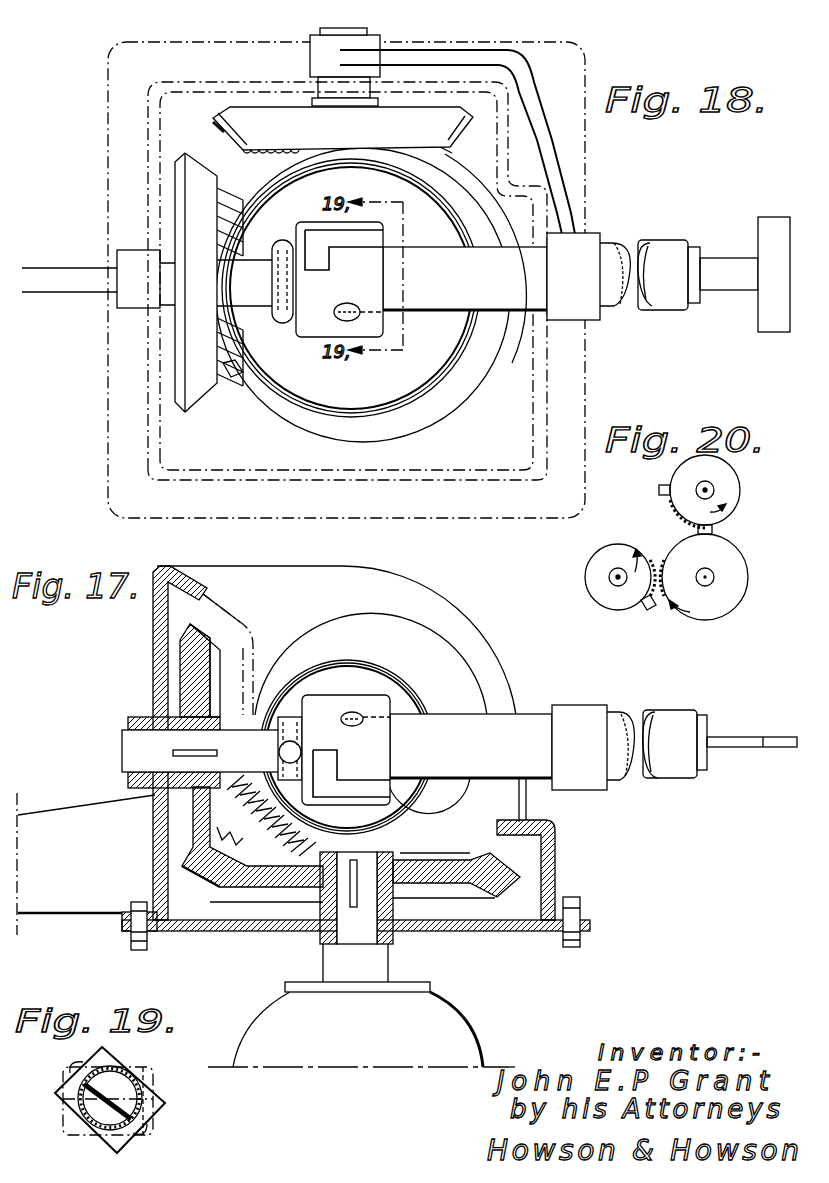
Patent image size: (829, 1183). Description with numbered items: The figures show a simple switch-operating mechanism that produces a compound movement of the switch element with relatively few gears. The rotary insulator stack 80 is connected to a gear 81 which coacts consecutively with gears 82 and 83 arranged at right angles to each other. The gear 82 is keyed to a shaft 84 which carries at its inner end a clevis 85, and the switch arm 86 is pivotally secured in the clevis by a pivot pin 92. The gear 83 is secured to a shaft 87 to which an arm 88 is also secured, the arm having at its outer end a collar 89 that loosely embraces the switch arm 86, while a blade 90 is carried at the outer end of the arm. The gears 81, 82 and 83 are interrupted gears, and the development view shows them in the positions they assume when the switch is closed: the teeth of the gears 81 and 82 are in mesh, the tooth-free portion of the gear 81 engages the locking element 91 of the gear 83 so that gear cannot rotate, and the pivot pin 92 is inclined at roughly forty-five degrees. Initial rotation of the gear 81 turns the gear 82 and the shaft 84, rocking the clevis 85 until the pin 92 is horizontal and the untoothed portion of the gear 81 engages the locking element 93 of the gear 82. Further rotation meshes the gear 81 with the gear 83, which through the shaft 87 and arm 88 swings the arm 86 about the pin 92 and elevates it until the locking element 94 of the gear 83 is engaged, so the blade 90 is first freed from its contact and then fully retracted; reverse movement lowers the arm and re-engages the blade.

In FIG. 17, the rotary insulator stack 80 is at (448, 1016).
In FIG. 18, the gear 81 is at (405, 433).
In FIG. 17, the gear 81 is at (201, 897).
In FIG. 20, the gear 81 is at (748, 591).
In FIG. 18, the gear 82 is at (205, 405).
In FIG. 17, the gear 82 is at (212, 647).
In FIG. 20, the gear 82 is at (613, 548).
In FIG. 18, the gear 83 is at (273, 130).
In FIG. 17, the gear 83 is at (420, 652).
In FIG. 20, the gear 83 is at (740, 493).
In FIG. 18, the shaft 84 is at (115, 266).
In FIG. 17, the shaft 84 is at (126, 745).
In FIG. 20, the shaft 84 is at (615, 578).
In FIG. 18, the clevis 85 is at (383, 275).
In FIG. 17, the clevis 85 is at (330, 703).
In FIG. 19, the clevis 85 is at (147, 1132).
In FIG. 18, the switch arm 86 is at (523, 300).
In FIG. 17, the switch arm 86 is at (522, 722).
In FIG. 19, the switch arm 86 is at (97, 1128).
In FIG. 18, the shaft 87 is at (367, 33).
In FIG. 20, the shaft 87 is at (708, 488).
In FIG. 18, the arm 88 is at (560, 162).
In FIG. 18, the collar 89 is at (590, 250).
In FIG. 17, the collar 89 is at (583, 712).
In FIG. 18, the blade 90 is at (780, 232).
In FIG. 17, the blade 90 is at (772, 741).
In FIG. 18, the locking element 91 is at (440, 150).
In FIG. 17, the locking element 91 is at (424, 855).
In FIG. 20, the locking element 91 is at (714, 529).
In FIG. 18, the pivot pin 92 is at (340, 312).
In FIG. 17, the pivot pin 92 is at (362, 722).
In FIG. 19, the pivot pin 92 is at (80, 1068).
In FIG. 18, the locking element 93 is at (232, 372).
In FIG. 17, the locking element 93 is at (271, 815).
In FIG. 20, the locking element 93 is at (648, 611).
In FIG. 18, the locking element 94 is at (213, 126).
In FIG. 20, the locking element 94 is at (659, 490).